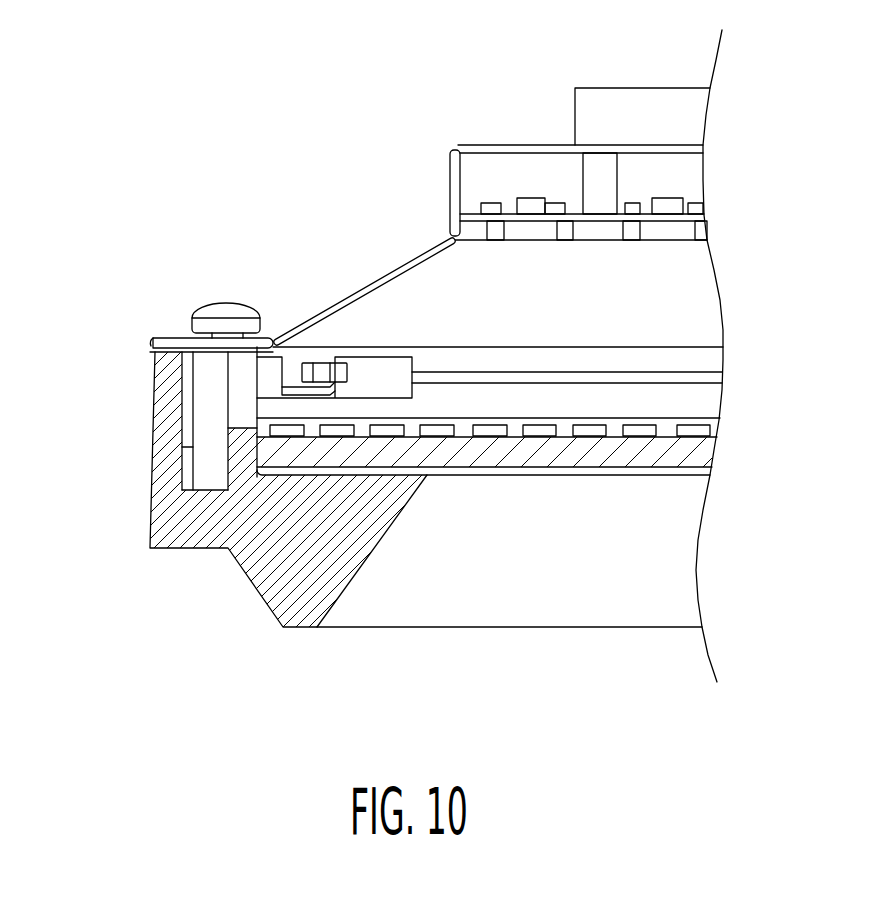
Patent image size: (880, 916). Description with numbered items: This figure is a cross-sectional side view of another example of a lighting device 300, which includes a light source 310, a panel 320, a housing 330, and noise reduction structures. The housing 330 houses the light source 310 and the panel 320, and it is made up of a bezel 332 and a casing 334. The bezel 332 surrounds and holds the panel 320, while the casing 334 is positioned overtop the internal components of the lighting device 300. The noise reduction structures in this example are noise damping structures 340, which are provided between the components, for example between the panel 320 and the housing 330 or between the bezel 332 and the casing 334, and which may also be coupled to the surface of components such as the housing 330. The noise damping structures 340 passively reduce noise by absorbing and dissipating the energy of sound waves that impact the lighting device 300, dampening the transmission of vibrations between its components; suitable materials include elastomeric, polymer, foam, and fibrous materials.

The lighting device 300 is at (382, 370).
The light source 310 is at (607, 368).
The panel 320 is at (559, 471).
The housing 330 is at (234, 535).
The bezel 332 is at (297, 627).
The casing 334 is at (638, 100).
The noise damping structure 340 is at (280, 336).